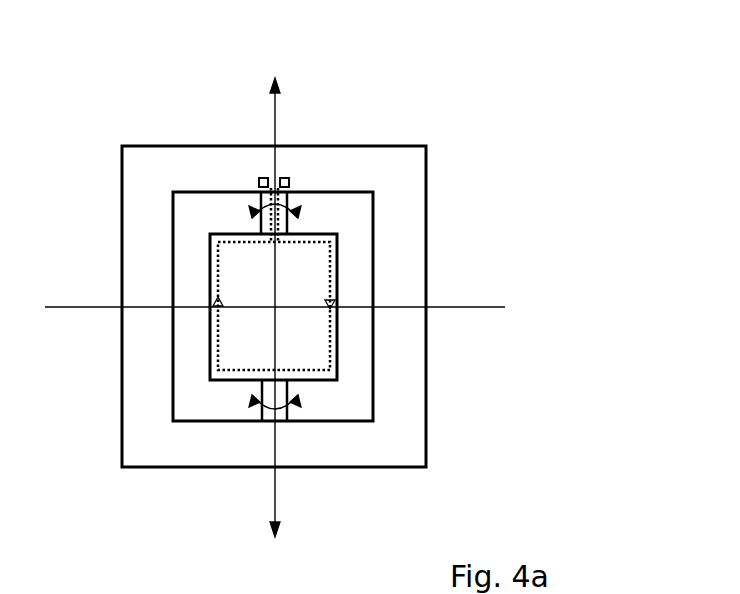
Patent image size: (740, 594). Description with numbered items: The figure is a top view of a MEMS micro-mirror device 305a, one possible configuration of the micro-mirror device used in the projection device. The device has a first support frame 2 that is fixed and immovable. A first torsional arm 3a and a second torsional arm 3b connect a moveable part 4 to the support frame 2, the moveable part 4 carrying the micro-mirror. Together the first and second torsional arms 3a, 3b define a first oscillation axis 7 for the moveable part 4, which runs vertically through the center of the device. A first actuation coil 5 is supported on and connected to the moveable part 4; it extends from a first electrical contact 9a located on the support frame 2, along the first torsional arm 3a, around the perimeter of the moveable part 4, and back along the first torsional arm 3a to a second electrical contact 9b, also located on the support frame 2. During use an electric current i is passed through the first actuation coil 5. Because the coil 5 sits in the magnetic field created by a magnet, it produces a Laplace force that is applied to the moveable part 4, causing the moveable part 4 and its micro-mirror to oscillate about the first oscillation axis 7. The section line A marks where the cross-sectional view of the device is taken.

The MEMS micro-mirror device 305a is at (506, 75).
The first support frame 2 is at (402, 192).
The first oscillation axis 7 is at (275, 112).
The first torsional arm 3a is at (277, 172).
The second torsional arm 3b is at (270, 412).
The first electrical contact 9a is at (263, 178).
The second electrical contact 9b is at (288, 178).
The moveable part 4 is at (243, 346).
The first actuation coil 5 is at (330, 348).
The electric current i is at (330, 272).
The section line A-A' A is at (280, 309).